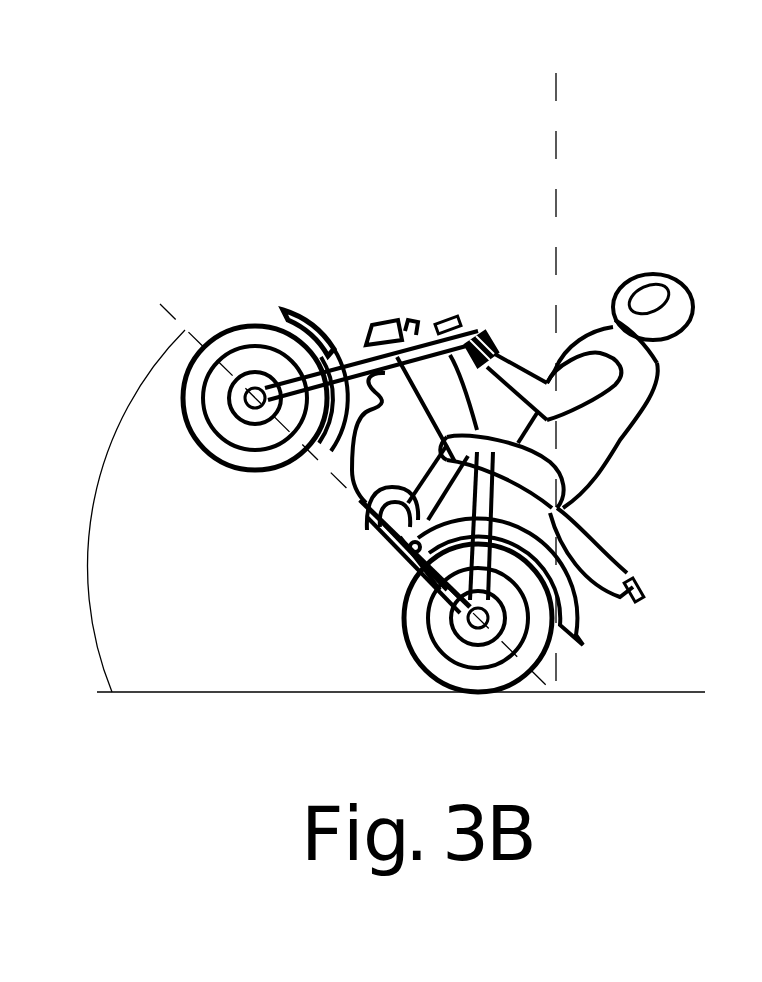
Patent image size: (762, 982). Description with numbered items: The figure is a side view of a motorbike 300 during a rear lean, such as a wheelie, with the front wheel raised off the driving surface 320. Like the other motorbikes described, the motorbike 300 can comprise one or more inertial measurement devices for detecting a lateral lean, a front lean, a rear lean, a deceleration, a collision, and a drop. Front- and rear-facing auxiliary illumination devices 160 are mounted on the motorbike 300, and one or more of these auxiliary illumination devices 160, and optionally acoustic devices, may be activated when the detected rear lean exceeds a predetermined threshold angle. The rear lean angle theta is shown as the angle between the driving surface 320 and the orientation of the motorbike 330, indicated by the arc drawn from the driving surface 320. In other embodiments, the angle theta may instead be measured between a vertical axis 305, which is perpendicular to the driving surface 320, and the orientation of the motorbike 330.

The motorbike 300 is at (160, 150).
The vertical axis 305 is at (556, 137).
The driving surface 320 is at (236, 692).
The orientation of the motorbike 330 is at (173, 313).
The auxiliary illumination device 160 is at (468, 318).